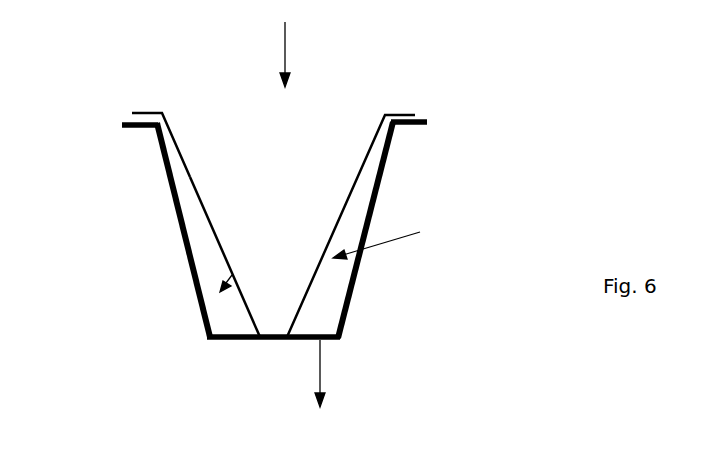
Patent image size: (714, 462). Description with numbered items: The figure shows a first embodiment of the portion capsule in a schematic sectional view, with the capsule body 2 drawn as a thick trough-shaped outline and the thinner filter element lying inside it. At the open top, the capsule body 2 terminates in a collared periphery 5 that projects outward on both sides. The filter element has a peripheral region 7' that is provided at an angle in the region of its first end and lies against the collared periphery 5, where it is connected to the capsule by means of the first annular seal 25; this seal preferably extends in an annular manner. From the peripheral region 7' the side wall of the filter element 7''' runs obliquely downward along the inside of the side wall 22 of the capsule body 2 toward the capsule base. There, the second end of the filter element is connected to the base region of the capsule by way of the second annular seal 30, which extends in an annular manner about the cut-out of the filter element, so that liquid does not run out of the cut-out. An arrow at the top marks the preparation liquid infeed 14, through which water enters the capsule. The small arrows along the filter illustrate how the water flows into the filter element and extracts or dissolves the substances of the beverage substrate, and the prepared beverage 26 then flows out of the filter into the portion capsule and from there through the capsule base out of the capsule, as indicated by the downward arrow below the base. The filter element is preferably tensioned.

The capsule body 2 is at (270, 257).
The collared periphery 5 is at (417, 122).
The peripheral region of the filter element 7' is at (161, 103).
The side wall of the filter element 7''' is at (242, 226).
The preparation liquid infeed 14 is at (309, 54).
The side wall 22 is at (170, 190).
The first annular seal 25 is at (132, 115).
The prepared beverage 26 is at (332, 330).
The second annular seal 30 is at (253, 340).